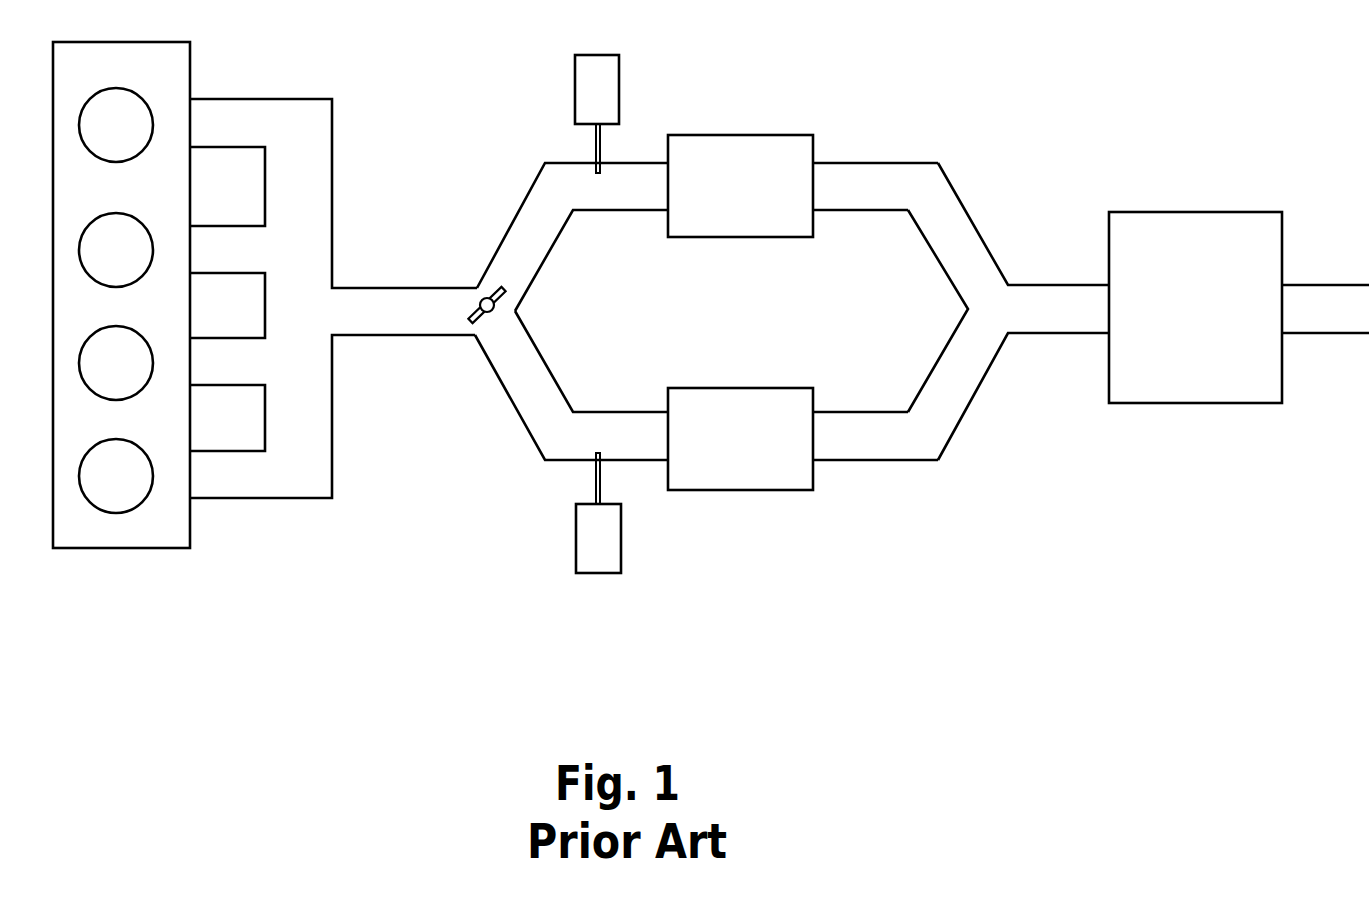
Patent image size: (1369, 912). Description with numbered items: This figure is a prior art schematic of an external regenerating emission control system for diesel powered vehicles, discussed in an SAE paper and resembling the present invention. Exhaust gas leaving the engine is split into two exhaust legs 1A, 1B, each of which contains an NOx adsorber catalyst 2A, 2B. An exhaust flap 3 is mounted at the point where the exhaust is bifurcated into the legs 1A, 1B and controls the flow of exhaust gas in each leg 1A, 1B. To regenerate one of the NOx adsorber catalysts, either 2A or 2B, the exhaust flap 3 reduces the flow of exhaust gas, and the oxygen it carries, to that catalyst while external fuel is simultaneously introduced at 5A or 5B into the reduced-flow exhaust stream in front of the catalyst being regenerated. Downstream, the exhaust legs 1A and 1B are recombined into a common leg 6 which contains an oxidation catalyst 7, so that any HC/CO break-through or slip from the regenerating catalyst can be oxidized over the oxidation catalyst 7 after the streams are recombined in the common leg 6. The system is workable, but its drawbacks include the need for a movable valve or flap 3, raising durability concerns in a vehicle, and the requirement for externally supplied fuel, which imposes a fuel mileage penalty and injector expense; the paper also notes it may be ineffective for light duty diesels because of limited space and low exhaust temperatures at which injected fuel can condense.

The exhaust leg 1A is at (513, 218).
The exhaust leg 1B is at (525, 428).
The NOx adsorber catalyst 2A is at (757, 133).
The NOx adsorber catalyst 2B is at (763, 492).
The exhaust flap 3 is at (483, 285).
The external fuel introduction point 5A is at (575, 73).
The external fuel introduction point 5B is at (576, 542).
The common leg 6 is at (1073, 283).
The oxidation catalyst 7 is at (1202, 404).